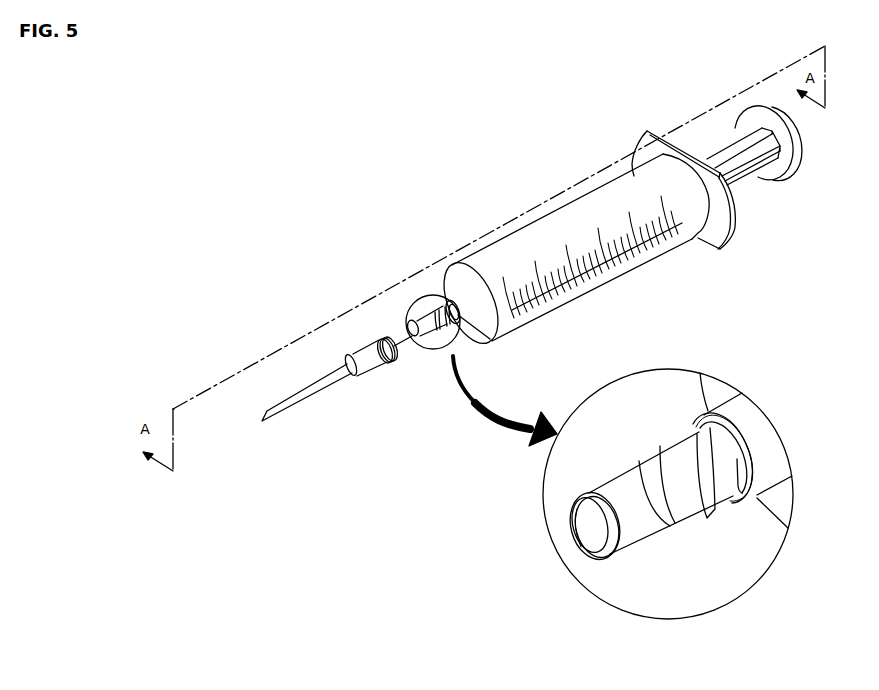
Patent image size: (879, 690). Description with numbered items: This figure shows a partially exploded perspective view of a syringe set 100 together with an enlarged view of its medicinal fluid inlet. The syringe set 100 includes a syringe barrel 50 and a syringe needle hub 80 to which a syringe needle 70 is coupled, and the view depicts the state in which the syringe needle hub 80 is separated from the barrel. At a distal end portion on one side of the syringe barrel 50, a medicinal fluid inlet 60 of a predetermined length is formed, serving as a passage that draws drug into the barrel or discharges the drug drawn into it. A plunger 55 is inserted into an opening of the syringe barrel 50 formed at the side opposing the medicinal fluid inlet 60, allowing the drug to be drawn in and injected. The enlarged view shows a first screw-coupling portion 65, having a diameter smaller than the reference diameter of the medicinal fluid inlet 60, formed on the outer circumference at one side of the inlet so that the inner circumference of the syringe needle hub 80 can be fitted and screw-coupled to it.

The syringe set 100 is at (277, 143).
The syringe barrel 50 is at (537, 232).
The plunger 55 is at (750, 165).
The medicinal fluid inlet 60 is at (429, 309).
The first screw-coupling portion 65 is at (690, 523).
The syringe needle 70 is at (303, 393).
The syringe needle hub 80 is at (365, 347).